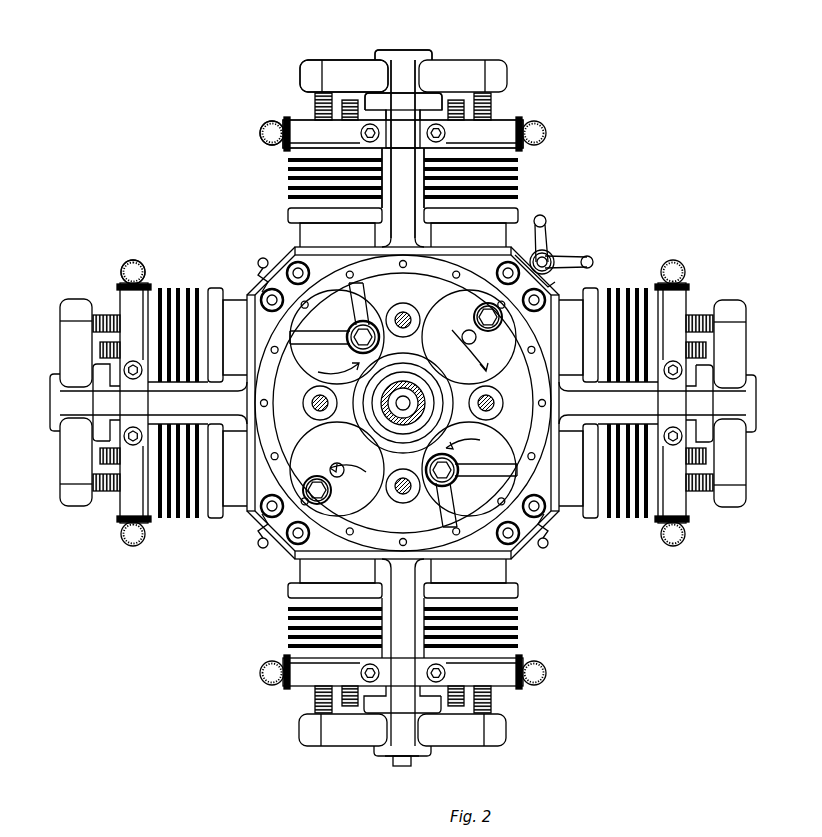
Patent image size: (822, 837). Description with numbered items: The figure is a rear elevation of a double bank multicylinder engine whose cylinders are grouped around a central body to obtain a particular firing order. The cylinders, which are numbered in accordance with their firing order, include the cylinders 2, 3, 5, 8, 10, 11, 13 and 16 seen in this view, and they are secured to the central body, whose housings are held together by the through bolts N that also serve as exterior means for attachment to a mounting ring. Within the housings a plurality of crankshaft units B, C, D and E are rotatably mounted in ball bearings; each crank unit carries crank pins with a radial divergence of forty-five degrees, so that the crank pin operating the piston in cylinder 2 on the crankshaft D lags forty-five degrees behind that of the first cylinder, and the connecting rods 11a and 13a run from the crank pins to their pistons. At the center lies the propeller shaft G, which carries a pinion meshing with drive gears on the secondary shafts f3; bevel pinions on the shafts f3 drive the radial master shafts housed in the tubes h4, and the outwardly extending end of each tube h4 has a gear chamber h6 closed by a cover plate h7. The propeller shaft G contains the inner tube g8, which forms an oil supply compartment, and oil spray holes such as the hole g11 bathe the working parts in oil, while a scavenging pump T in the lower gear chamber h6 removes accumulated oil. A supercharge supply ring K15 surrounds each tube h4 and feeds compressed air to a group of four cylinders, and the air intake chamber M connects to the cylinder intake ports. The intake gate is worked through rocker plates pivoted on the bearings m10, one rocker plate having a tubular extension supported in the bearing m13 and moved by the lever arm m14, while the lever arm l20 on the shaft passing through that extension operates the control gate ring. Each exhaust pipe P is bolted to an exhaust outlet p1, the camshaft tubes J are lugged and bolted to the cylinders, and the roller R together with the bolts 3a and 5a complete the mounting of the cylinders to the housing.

The camshaft tube J is at (318, 60).
The air intake chamber M is at (401, 128).
The cover plate h7 is at (412, 58).
The gear chamber h6 is at (416, 96).
The tube h4 is at (412, 118).
The exhaust outlet p1 is at (300, 130).
The exhaust pipe P is at (262, 134).
The roller R is at (134, 262).
The supercharge supply ring K15 is at (395, 196).
The cylinder 3 is at (315, 194).
The cylinder 2 is at (490, 196).
The cylinder 16 is at (626, 300).
The cylinder 13 is at (624, 520).
The cylinder 5 is at (178, 330).
The cylinder 8 is at (186, 500).
The cylinder 10 is at (320, 640).
The cylinder 11 is at (500, 635).
The through bolt N is at (412, 392).
The lever arm m14 is at (548, 238).
The bearing m13 is at (550, 255).
The lever arm l20 is at (576, 259).
The bearing m10 is at (258, 265).
The flange bolt 3a is at (299, 262).
The flange bolt 5a is at (262, 298).
The scavenging pump T is at (400, 768).
The oil spray hole g11 is at (402, 395).
The inner tube g8 is at (435, 392).
The propeller shaft G is at (372, 392).
The secondary shaft f3 is at (406, 318).
The crankshaft unit B is at (337, 469).
The crankshaft unit C is at (469, 469).
The crankshaft unit D is at (469, 337).
The crankshaft unit E is at (337, 337).
The connecting rod 13a is at (500, 468).
The connecting rod 11a is at (446, 522).